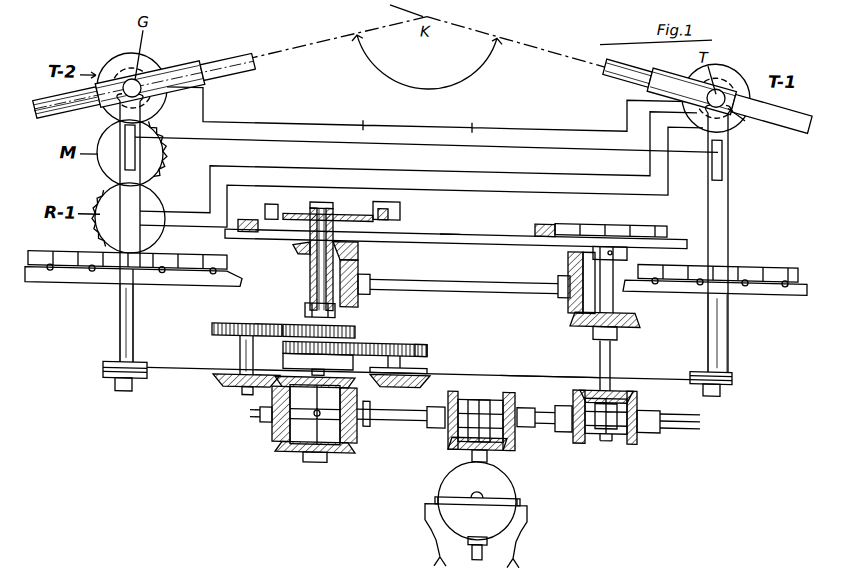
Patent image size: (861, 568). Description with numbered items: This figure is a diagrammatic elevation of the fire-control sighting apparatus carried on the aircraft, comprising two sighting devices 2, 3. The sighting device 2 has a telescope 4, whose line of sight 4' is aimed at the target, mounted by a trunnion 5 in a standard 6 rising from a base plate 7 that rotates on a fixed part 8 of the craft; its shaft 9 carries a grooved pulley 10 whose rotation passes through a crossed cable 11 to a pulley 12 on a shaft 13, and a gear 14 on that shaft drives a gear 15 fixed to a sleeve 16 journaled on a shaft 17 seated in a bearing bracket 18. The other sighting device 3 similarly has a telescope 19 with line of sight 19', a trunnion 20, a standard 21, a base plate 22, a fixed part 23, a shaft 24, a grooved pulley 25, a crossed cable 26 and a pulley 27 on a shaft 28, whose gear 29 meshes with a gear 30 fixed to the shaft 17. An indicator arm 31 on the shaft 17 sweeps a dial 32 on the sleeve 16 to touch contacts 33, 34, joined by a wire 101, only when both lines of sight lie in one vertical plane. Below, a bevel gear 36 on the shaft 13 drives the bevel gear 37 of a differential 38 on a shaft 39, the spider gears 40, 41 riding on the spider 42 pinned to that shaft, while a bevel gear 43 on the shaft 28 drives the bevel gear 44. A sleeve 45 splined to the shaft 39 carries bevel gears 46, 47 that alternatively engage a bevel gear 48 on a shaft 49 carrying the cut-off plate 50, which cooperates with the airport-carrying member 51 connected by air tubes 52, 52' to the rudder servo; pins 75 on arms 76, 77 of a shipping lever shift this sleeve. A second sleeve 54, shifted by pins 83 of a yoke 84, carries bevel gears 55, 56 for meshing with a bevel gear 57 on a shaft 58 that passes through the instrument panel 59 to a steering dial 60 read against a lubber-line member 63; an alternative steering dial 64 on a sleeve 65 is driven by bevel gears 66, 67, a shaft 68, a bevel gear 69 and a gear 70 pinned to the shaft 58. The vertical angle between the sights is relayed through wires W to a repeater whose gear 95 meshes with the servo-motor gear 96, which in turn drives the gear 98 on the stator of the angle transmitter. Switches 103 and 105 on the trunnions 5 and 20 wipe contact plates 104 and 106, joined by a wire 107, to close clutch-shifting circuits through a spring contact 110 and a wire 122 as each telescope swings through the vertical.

The sighting device 2 is at (155, 46).
The sighting device 3 is at (738, 45).
The telescope 4 is at (144, 80).
The line of sight 4' is at (231, 63).
The trunnion 5 is at (128, 65).
The standard 6 is at (114, 248).
The base plate 7 is at (76, 256).
The fixed part 8 is at (60, 283).
The shaft 9 is at (120, 327).
The grooved pulley 10 is at (103, 366).
The crossed cable 11 is at (180, 368).
The pulley 12 is at (238, 352).
The shaft 13 is at (240, 338).
The gear 14 is at (226, 319).
The gear 15 is at (301, 305).
The sleeve 16 is at (311, 261).
The shaft 17 is at (322, 272).
The bearing bracket 18 is at (288, 354).
The telescope 19 is at (707, 93).
The line of sight 19' is at (618, 71).
The trunnion 20 is at (762, 85).
The standard 21 is at (728, 203).
The base plate 22 is at (750, 253).
The fixed part 23 is at (745, 279).
The shaft 24 is at (728, 321).
The grooved pulley 25 is at (732, 358).
The crossed cable 26 is at (530, 364).
The pulley 27 is at (430, 361).
The shaft 28 is at (432, 341).
The gear 29 is at (412, 336).
The gear 30 is at (356, 326).
The circuit-closing indicator arm 31 is at (326, 195).
The dial 32 is at (380, 201).
The contact 33 is at (270, 198).
The contact 34 is at (400, 200).
The bevel gear 36 is at (222, 381).
The bevel gear 37 is at (272, 441).
The differential 38 is at (233, 420).
The shaft 39 is at (272, 419).
The spider gear 40 is at (300, 447).
The spider gear 41 is at (276, 381).
The differential spider 42 is at (357, 421).
The bevel gear 43 is at (396, 378).
The bevel gear 44 is at (366, 440).
The sleeve 45 is at (447, 418).
The bevel gear 46 is at (456, 443).
The bevel gear 47 is at (526, 396).
The bevel gear 48 is at (466, 442).
The shaft 49 is at (505, 458).
The cut-off plate 50 is at (500, 483).
The airport-carrying member 51 is at (500, 505).
The air tube 52 is at (427, 531).
The air tube 52' is at (532, 533).
The sleeve 54 is at (660, 419).
The bevel gear 55 is at (570, 420).
The bevel gear 56 is at (640, 392).
The bevel gear 57 is at (612, 378).
The shaft 58 is at (602, 350).
The instrument panel 59 is at (448, 226).
The steering dial 60 is at (661, 211).
The member 63 is at (547, 212).
The steering dial 64 is at (402, 225).
The sleeve 65 is at (360, 259).
The bevel gear 66 is at (293, 243).
The bevel gear 67 is at (370, 285).
The shaft 68 is at (486, 276).
The bevel gear 69 is at (567, 261).
The gear 70 is at (641, 311).
The pin 75 is at (506, 384).
The arm 76 is at (456, 386).
The arm 77 is at (488, 445).
The pin 83 is at (625, 393).
The yoke 84 is at (618, 427).
The gear 95 is at (98, 184).
The gear 96 is at (100, 166).
The gear 98 is at (153, 110).
The wire 101 is at (489, 178).
The switch 103 is at (106, 114).
The contact plate 104 is at (135, 152).
The switch 105 is at (746, 106).
The contact plate 106 is at (722, 152).
The wire 107 is at (412, 139).
The spring contact 110 is at (222, 113).
The wire 122 is at (530, 115).
The wire W is at (486, 165).